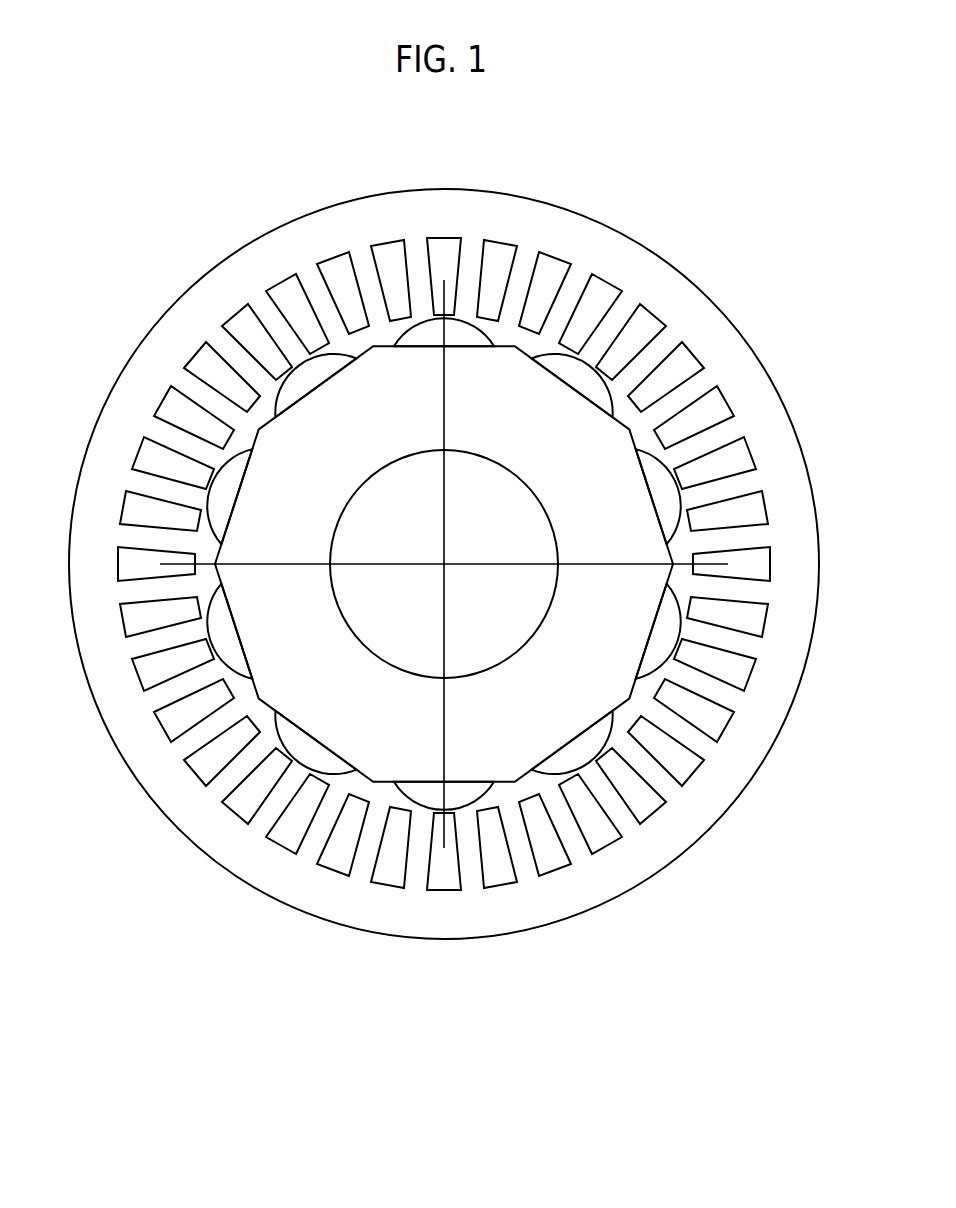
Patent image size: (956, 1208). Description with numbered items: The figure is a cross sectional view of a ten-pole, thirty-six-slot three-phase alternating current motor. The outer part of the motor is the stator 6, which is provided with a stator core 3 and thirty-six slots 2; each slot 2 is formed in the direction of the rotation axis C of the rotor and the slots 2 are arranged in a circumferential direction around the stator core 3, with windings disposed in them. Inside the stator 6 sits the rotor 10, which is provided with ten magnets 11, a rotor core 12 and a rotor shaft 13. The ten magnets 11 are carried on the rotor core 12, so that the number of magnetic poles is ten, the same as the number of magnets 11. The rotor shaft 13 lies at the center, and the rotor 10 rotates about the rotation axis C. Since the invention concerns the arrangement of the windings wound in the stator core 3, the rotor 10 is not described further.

The stator 6 is at (735, 222).
The stator core 3 is at (500, 202).
The slots 2 is at (545, 283).
The magnets 11 is at (232, 322).
The rotor 10 is at (362, 340).
The rotor core 12 is at (282, 670).
The rotor shaft 13 is at (388, 608).
The rotation axis C is at (444, 564).